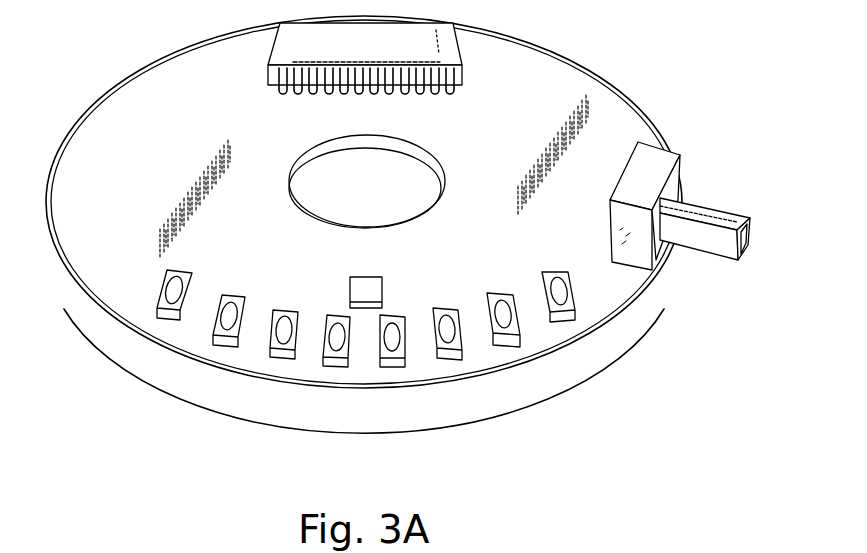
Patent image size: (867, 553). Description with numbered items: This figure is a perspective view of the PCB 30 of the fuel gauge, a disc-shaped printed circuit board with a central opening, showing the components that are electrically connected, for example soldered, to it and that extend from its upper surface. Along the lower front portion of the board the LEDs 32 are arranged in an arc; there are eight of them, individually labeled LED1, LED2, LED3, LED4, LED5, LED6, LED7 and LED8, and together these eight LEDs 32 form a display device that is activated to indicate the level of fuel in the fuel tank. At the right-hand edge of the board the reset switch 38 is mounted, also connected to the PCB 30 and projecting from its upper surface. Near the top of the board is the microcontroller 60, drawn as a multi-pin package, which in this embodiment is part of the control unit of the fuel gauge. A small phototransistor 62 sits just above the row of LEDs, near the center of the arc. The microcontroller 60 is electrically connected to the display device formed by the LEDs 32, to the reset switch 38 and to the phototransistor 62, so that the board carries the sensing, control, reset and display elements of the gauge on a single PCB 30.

The PCB 30 is at (518, 124).
The LEDs 32 is at (120, 266).
The reset switch 38 is at (662, 145).
The microcontroller 60 is at (379, 53).
The phototransistor 62 is at (377, 277).
The LED 1 LED1 is at (157, 319).
The LED 2 LED2 is at (215, 346).
The LED 3 LED3 is at (275, 358).
The LED 4 LED4 is at (340, 367).
The LED 5 LED5 is at (390, 367).
The LED 6 LED6 is at (447, 360).
The LED 7 LED7 is at (503, 347).
The LED 8 LED8 is at (563, 321).